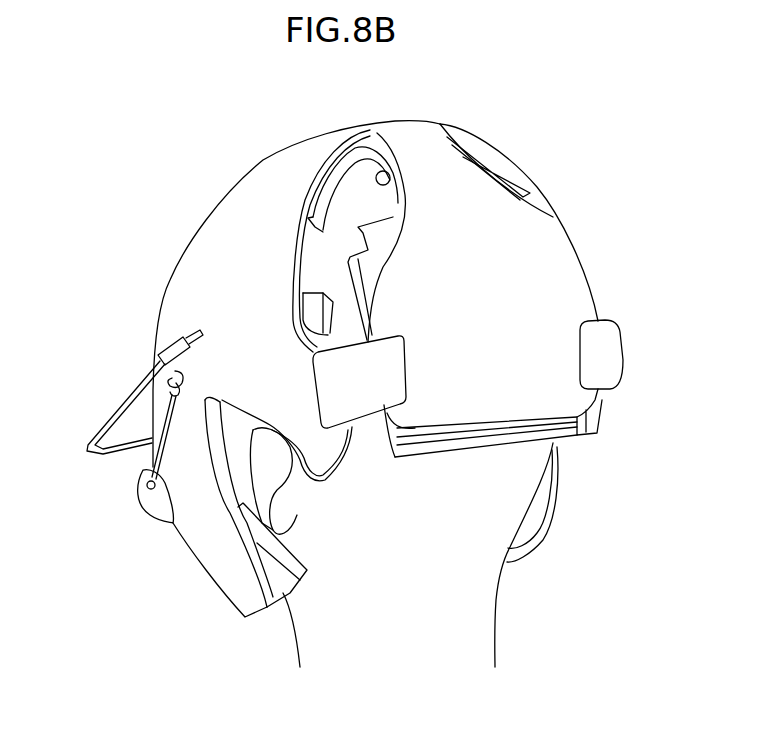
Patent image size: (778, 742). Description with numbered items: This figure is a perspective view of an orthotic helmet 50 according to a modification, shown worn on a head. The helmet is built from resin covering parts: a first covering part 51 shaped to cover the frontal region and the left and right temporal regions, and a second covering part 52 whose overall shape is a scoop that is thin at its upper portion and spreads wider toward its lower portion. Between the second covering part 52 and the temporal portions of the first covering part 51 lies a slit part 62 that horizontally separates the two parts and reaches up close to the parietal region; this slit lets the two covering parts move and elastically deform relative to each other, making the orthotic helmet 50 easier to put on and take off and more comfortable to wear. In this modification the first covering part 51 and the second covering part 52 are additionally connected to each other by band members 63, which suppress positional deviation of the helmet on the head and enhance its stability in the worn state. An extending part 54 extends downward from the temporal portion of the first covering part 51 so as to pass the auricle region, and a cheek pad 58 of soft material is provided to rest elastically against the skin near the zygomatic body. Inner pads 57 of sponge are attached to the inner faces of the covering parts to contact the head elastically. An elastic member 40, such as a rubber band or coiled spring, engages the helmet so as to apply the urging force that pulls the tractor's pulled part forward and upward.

The elastic member 40 is at (150, 460).
The orthotic helmet 50 is at (174, 221).
The first covering part 51 is at (252, 262).
The second covering part 52 is at (500, 322).
The extending part 54 is at (193, 530).
The inner pad 57 is at (388, 174).
The cheek pad 58 is at (290, 600).
The slit part 62 is at (368, 455).
The band member 63 is at (373, 397).